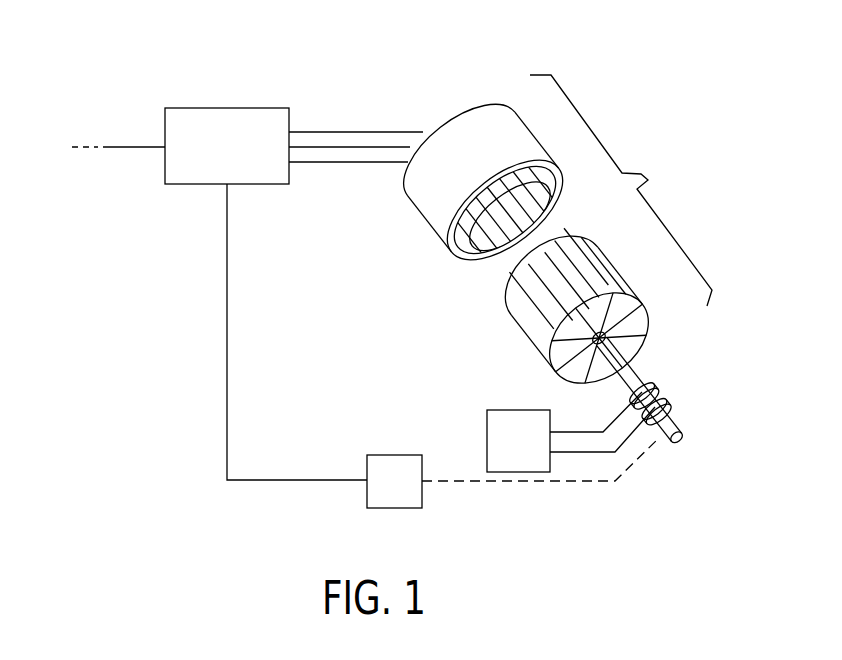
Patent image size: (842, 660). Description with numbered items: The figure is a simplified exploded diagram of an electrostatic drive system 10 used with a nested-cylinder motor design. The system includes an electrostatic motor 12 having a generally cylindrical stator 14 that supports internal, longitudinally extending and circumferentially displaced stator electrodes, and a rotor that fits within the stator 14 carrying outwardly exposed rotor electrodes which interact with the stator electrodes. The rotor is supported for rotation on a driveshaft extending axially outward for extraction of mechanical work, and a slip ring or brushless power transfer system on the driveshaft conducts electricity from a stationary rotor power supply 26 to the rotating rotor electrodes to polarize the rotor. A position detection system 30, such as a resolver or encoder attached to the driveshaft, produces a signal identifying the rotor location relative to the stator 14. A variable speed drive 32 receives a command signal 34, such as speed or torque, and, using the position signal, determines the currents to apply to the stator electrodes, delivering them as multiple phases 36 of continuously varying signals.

The electrostatic drive system 10 is at (177, 50).
The electrostatic motor 12 is at (621, 190).
The stator 14 is at (485, 195).
The rotor power supply 26 is at (532, 453).
The position detection system 30 is at (408, 494).
The variable speed drive 32 is at (241, 160).
The command signal 34 is at (133, 147).
The multiple phases 36 is at (350, 162).